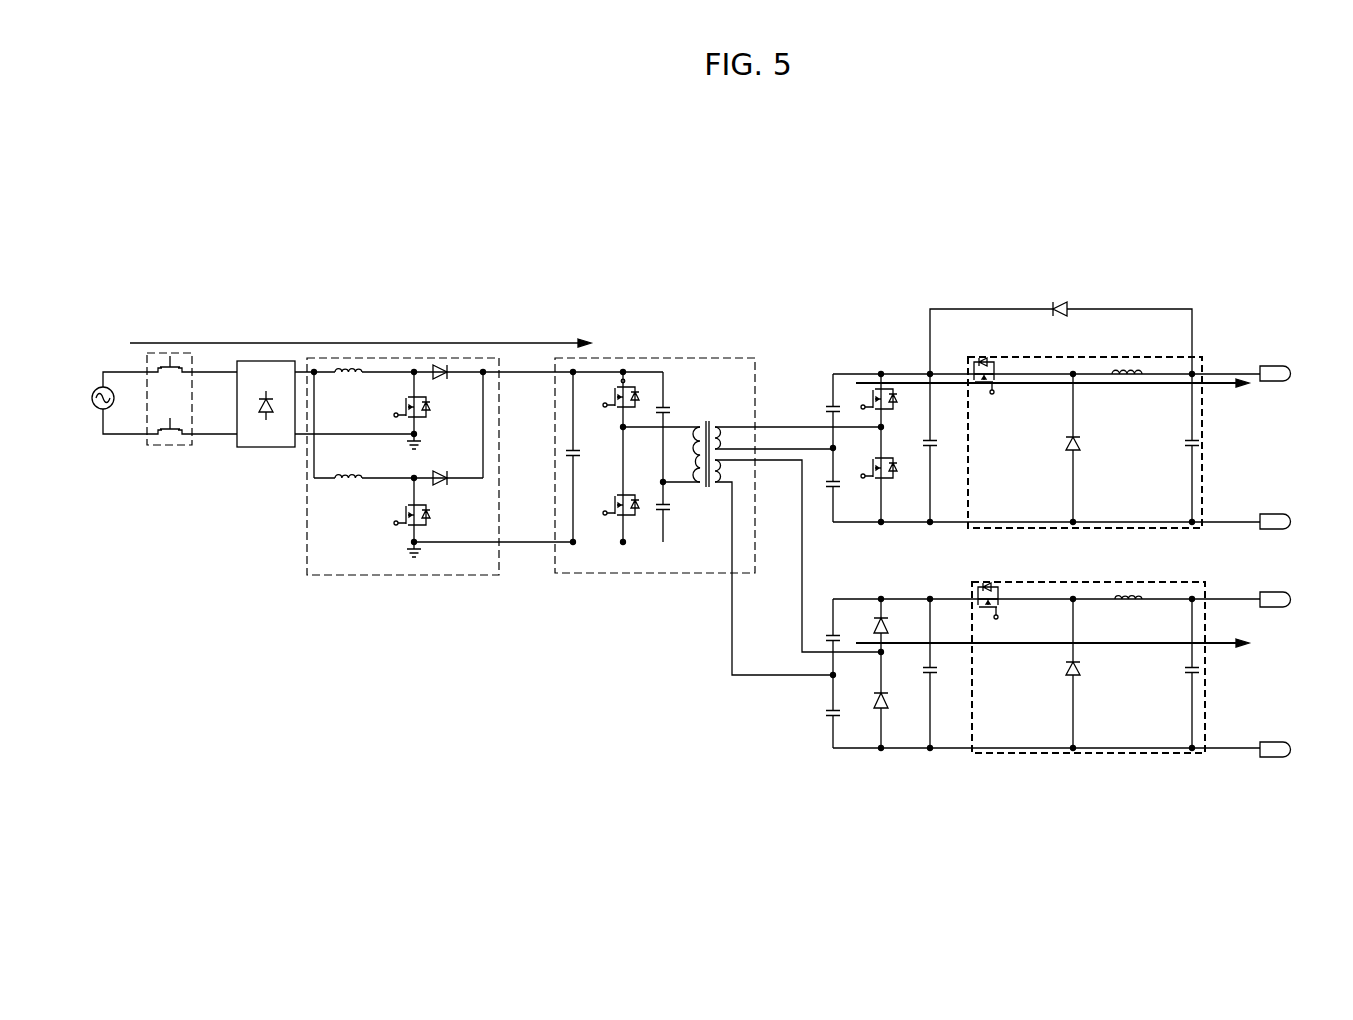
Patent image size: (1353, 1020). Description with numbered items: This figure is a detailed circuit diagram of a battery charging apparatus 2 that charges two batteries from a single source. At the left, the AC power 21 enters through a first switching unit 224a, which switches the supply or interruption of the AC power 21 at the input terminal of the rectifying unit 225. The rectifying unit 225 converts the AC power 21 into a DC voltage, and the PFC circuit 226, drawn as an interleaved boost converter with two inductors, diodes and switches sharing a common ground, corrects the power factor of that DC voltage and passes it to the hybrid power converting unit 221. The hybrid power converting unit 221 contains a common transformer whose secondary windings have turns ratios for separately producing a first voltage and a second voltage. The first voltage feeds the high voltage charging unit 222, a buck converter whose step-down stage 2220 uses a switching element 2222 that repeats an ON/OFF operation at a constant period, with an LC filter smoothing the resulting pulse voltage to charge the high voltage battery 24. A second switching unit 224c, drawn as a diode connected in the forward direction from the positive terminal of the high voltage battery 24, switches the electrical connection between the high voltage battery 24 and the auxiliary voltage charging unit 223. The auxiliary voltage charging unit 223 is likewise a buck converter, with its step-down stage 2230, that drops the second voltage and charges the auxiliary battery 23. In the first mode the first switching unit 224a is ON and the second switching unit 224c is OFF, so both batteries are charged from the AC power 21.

The battery charging apparatus 2 is at (256, 235).
The AC power 21 is at (92, 404).
The first switching unit 224a is at (169, 448).
The rectifying unit 225 is at (248, 448).
The PFC circuit 226 is at (403, 576).
The hybrid power converting unit 221 is at (633, 575).
The high voltage charging unit 222 is at (1216, 345).
The high-voltage buck converter circuit 2220 is at (969, 530).
The switching element 2222 is at (960, 356).
The second switching unit 224c is at (1060, 302).
The high voltage battery 24 is at (1304, 432).
The auxiliary voltage charging unit 223 is at (1038, 772).
The low-voltage buck converter circuit 2230 is at (973, 756).
The auxiliary battery 23 is at (1304, 660).